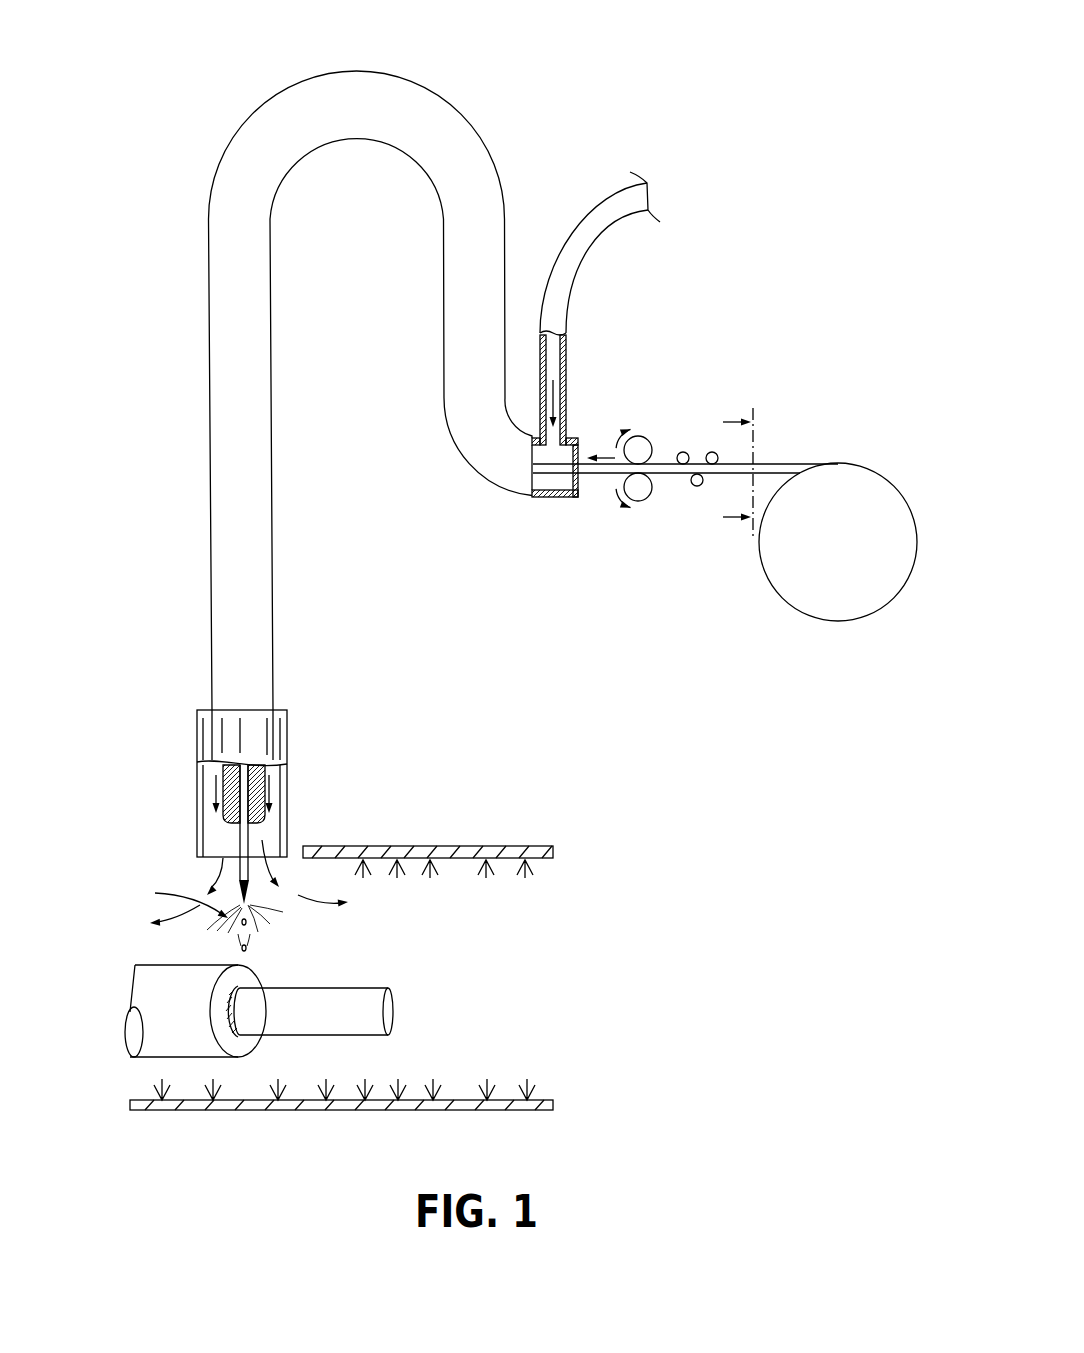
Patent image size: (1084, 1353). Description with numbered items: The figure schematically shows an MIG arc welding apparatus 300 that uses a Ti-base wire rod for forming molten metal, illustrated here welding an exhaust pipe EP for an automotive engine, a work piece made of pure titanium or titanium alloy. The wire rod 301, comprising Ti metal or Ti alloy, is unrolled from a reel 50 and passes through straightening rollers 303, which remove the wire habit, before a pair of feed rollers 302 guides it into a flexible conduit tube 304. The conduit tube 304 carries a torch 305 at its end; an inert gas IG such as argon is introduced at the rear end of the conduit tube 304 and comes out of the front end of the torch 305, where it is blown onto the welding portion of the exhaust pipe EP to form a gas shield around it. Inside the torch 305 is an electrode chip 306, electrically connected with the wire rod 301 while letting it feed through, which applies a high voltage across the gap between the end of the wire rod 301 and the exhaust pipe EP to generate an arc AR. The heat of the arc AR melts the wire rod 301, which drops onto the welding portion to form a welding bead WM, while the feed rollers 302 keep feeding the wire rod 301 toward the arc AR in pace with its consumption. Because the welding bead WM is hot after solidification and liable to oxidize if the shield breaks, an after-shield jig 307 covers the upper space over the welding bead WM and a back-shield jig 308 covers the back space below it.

The apparatus 300 is at (475, 66).
The flexible conduit tube 304 is at (452, 125).
The straightening rollers 303 is at (693, 446).
The feed rollers 302 is at (641, 492).
The reel 50 is at (837, 612).
The torch 305 is at (287, 733).
The electrode chip 306 is at (263, 768).
The wire rod 301 is at (246, 834).
The after-shield jig 307 is at (510, 848).
The back-shield jig 308 is at (462, 1100).
The inert gas IG is at (552, 395).
The arc AR is at (236, 904).
The exhaust pipe EP is at (380, 1008).
The welding bead WM is at (237, 1033).